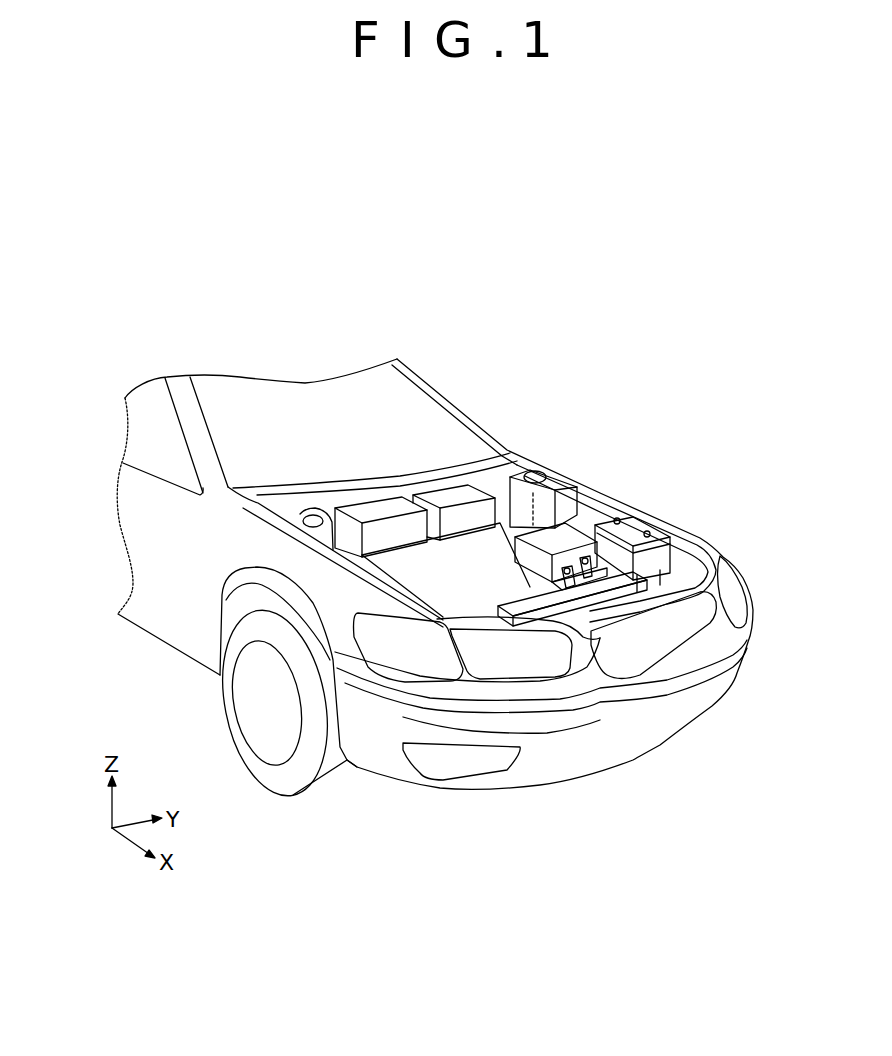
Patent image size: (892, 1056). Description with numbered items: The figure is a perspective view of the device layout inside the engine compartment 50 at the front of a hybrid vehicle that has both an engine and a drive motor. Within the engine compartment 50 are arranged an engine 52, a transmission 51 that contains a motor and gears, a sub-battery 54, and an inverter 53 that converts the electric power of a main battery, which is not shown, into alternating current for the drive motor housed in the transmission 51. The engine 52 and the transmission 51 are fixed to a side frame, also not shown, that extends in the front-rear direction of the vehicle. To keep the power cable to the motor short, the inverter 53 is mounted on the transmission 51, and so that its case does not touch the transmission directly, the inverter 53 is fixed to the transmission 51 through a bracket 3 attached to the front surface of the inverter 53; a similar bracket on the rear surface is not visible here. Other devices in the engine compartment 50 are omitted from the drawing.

The engine compartment 50 is at (445, 381).
The transmission 51 is at (533, 473).
The engine 52 is at (517, 600).
The inverter 53 is at (563, 537).
The sub-battery 54 is at (635, 527).
The bracket 3 is at (590, 580).